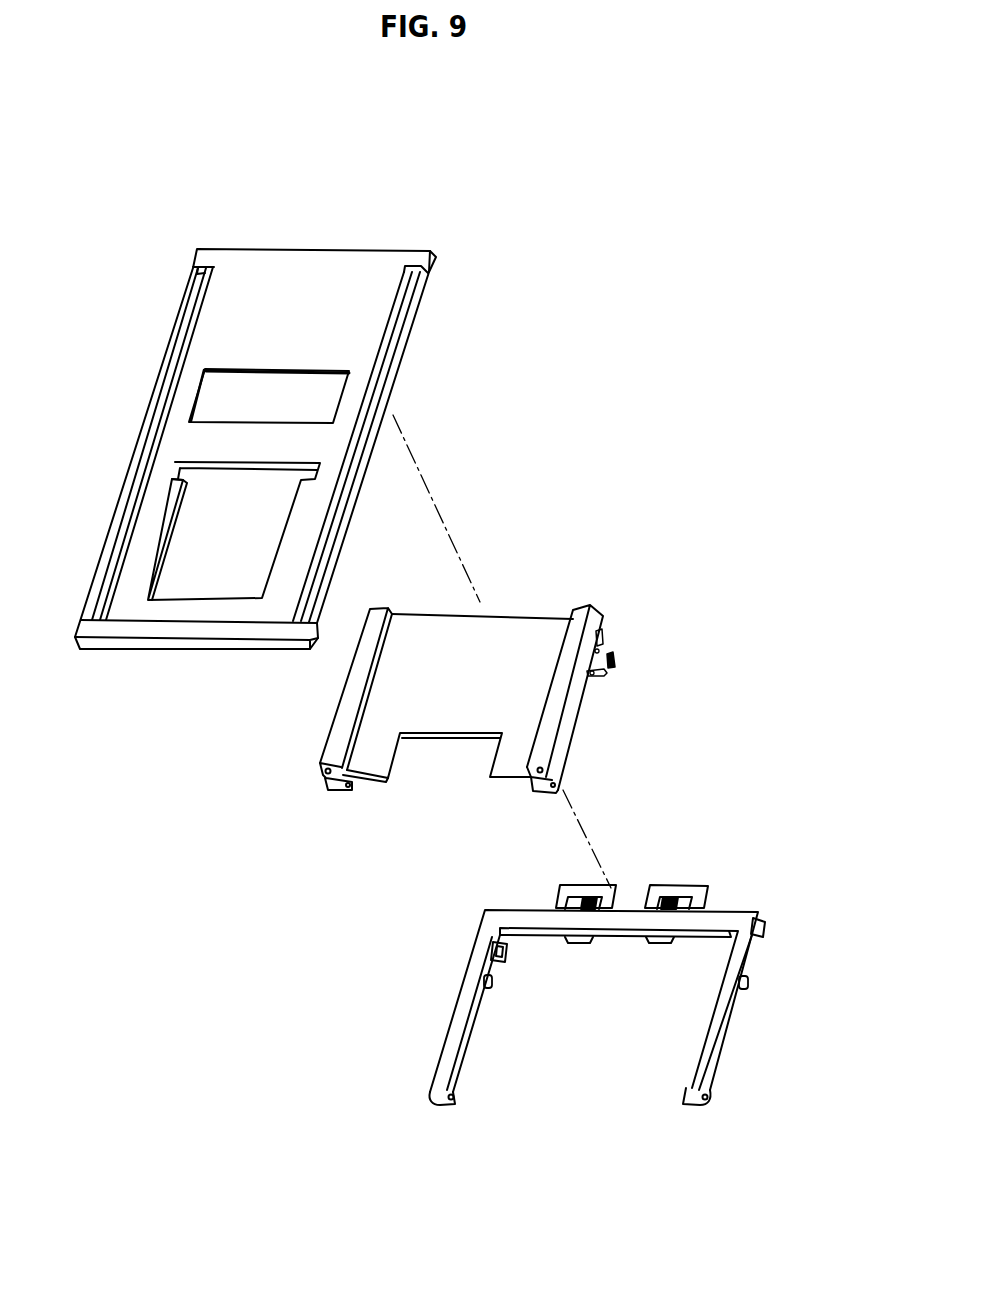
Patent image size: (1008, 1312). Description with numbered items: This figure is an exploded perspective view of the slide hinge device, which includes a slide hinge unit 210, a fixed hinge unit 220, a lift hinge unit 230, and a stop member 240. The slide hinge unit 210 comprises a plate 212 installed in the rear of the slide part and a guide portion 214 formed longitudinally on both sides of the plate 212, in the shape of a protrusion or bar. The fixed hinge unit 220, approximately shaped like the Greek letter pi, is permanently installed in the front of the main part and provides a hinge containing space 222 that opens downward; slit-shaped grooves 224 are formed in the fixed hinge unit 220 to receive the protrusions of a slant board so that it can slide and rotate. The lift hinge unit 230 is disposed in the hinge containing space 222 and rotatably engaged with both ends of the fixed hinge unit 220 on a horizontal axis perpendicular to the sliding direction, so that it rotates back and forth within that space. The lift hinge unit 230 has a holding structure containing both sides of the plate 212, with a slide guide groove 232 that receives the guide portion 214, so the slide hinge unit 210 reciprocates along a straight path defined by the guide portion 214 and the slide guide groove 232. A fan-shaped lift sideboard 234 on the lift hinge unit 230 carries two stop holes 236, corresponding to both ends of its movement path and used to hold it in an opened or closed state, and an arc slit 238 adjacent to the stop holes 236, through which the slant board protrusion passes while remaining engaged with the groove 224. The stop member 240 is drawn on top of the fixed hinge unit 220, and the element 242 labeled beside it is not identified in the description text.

The slide hinge unit 210 is at (309, 449).
The plate 212 is at (208, 337).
The guide portion 214 is at (135, 478).
The fixed hinge unit 220 is at (566, 1003).
The hinge containing space 222 is at (572, 1066).
The groove 224 is at (750, 980).
The lift hinge unit 230 is at (494, 650).
The slide guide groove 232 is at (322, 773).
The lift sideboard 234 is at (657, 695).
The stop hole 236 is at (605, 630).
The arc slit 238 is at (603, 670).
The stop member 240 is at (698, 837).
The clip frame 242 is at (707, 883).